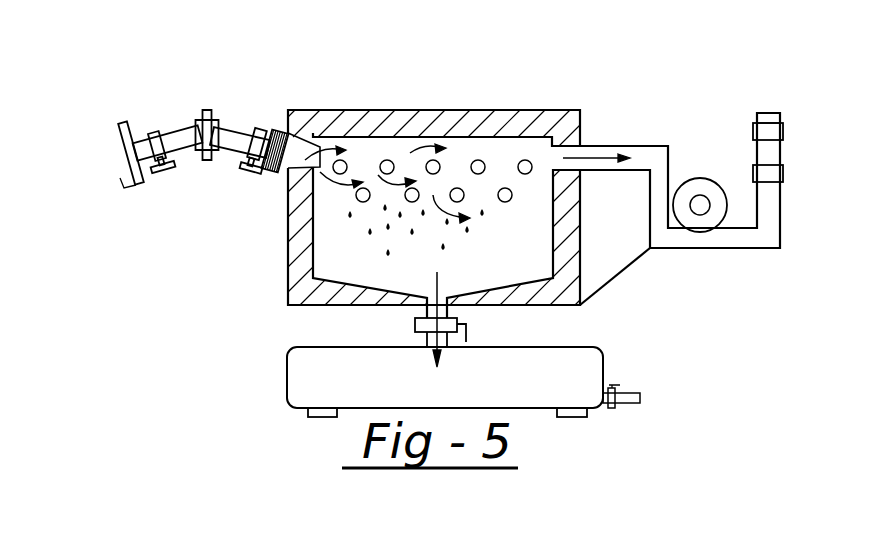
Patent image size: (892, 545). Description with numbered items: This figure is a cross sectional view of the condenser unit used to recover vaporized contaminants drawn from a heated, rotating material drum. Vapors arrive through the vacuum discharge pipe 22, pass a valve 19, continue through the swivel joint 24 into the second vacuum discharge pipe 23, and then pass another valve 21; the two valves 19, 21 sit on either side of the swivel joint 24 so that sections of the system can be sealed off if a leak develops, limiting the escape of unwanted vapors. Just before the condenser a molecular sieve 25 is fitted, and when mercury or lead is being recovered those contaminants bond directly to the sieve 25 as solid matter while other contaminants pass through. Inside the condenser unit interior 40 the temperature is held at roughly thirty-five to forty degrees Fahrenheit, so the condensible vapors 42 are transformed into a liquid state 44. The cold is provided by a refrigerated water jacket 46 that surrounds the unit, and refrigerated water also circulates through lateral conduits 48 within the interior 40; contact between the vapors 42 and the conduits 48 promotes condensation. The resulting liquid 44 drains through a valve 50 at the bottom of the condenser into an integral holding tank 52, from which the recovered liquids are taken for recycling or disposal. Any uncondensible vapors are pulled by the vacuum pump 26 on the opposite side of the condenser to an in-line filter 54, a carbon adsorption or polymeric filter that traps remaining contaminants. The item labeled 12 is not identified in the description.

The inlet conduit 12 is at (118, 122).
The valve 19 is at (155, 131).
The valve 21 is at (257, 128).
The vacuum discharge pipe 22 is at (182, 157).
The vacuum discharge pipe 23 is at (238, 128).
The swivel joint 24 is at (207, 110).
The molecular sieve 25 is at (268, 174).
The vacuum pump 26 is at (694, 179).
The condenser unit interior 40 is at (540, 148).
The condensible vapors 42 is at (398, 186).
The liquid state 44 is at (429, 208).
The refrigerated water jacket 46 is at (300, 265).
The lateral conduits 48 is at (481, 158).
The valve 50 is at (415, 322).
The integral holding tank 52 is at (588, 360).
The in-line filter 54 is at (773, 175).